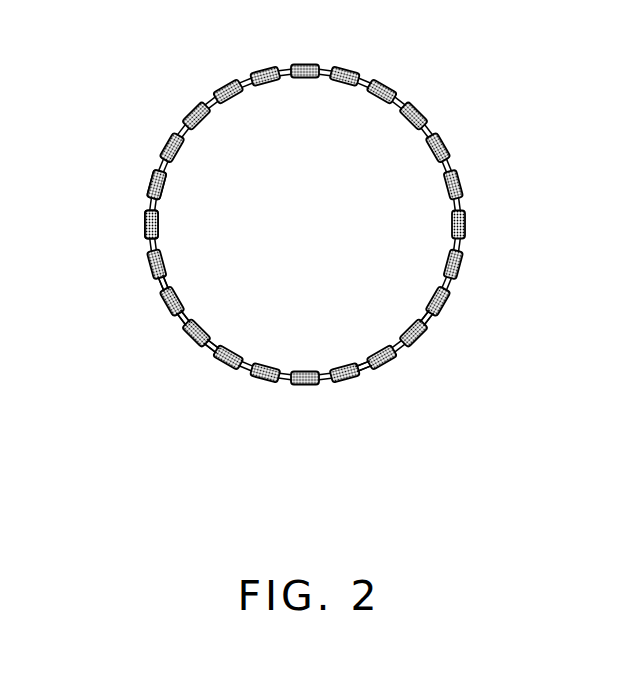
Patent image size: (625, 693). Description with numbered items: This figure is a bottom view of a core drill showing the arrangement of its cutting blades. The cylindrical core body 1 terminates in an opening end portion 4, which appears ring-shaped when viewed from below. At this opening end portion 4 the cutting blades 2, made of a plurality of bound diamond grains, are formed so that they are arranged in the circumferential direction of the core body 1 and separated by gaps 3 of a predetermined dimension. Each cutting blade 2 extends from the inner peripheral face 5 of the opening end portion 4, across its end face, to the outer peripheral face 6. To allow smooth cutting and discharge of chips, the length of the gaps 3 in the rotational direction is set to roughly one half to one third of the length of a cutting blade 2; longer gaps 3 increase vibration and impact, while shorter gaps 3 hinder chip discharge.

The core body 1 is at (211, 100).
The cutting blades 2 is at (142, 222).
The gaps 3 is at (182, 319).
The opening end portion 4 is at (210, 348).
The inner peripheral face 5 is at (432, 312).
The outer peripheral face 6 is at (366, 369).